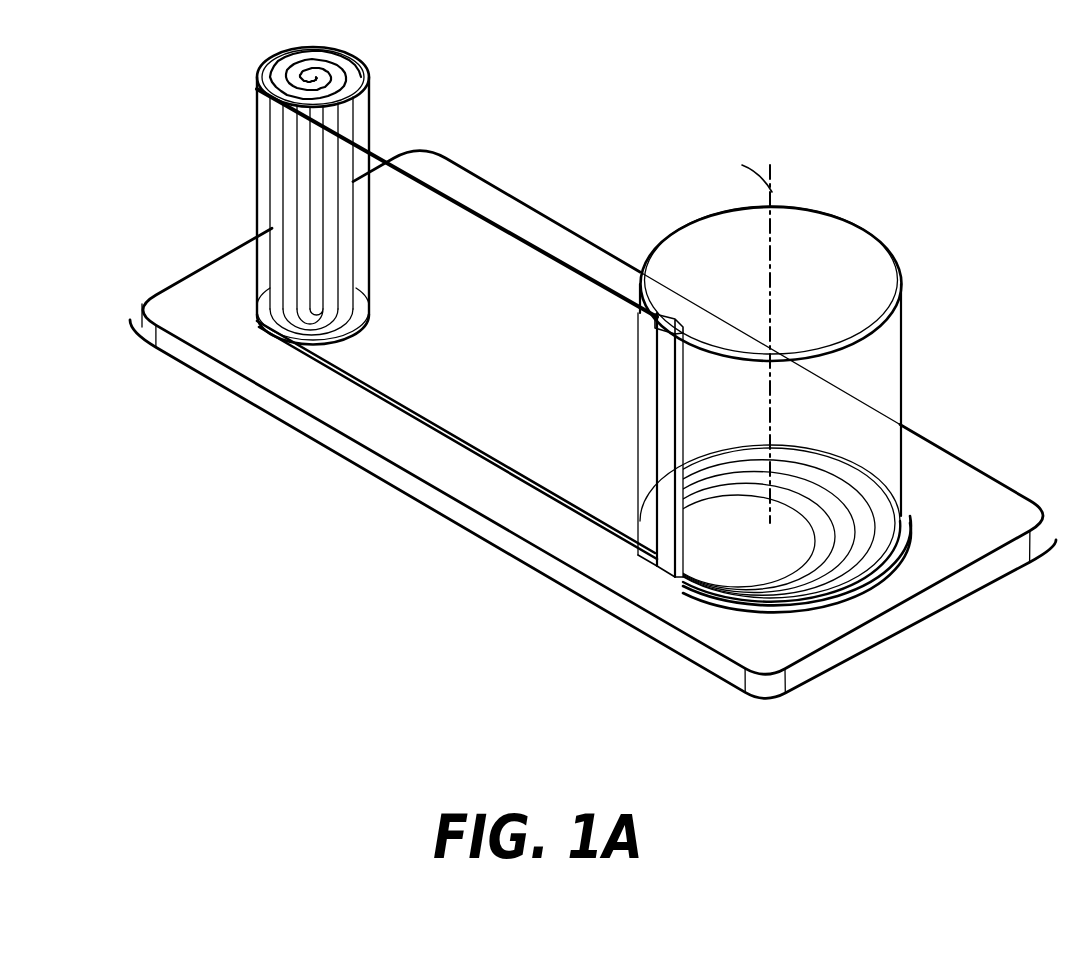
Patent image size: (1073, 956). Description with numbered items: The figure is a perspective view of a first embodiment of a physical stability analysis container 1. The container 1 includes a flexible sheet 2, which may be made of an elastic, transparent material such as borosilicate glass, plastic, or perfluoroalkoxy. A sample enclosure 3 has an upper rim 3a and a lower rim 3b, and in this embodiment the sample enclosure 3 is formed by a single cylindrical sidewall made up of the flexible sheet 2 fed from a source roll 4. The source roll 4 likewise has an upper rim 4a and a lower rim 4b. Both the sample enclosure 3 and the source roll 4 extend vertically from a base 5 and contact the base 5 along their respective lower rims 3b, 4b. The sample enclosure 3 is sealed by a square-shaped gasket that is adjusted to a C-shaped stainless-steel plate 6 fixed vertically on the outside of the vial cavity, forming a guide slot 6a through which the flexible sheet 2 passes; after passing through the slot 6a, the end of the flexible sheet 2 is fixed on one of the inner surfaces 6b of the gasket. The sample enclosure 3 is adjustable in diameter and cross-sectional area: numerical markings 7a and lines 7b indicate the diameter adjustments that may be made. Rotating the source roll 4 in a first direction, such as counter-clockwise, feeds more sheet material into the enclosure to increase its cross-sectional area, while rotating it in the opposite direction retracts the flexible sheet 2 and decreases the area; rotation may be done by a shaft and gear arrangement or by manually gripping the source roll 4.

The physical stability analysis container 1 is at (170, 154).
The flexible sheet 2 is at (462, 338).
The sample enclosure 3 is at (888, 378).
The upper rim 3a is at (828, 214).
The lower rim 3b is at (893, 530).
The source roll 4 is at (345, 132).
The upper rim 4a is at (345, 56).
The lower rim 4b is at (258, 311).
The base 5 is at (208, 325).
The C-shaped stainless-steel plate 6 is at (667, 497).
The guide slot 6a is at (670, 560).
The inner surface 6b is at (648, 298).
The numerical markings 7a is at (780, 513).
The lines 7b is at (832, 540).